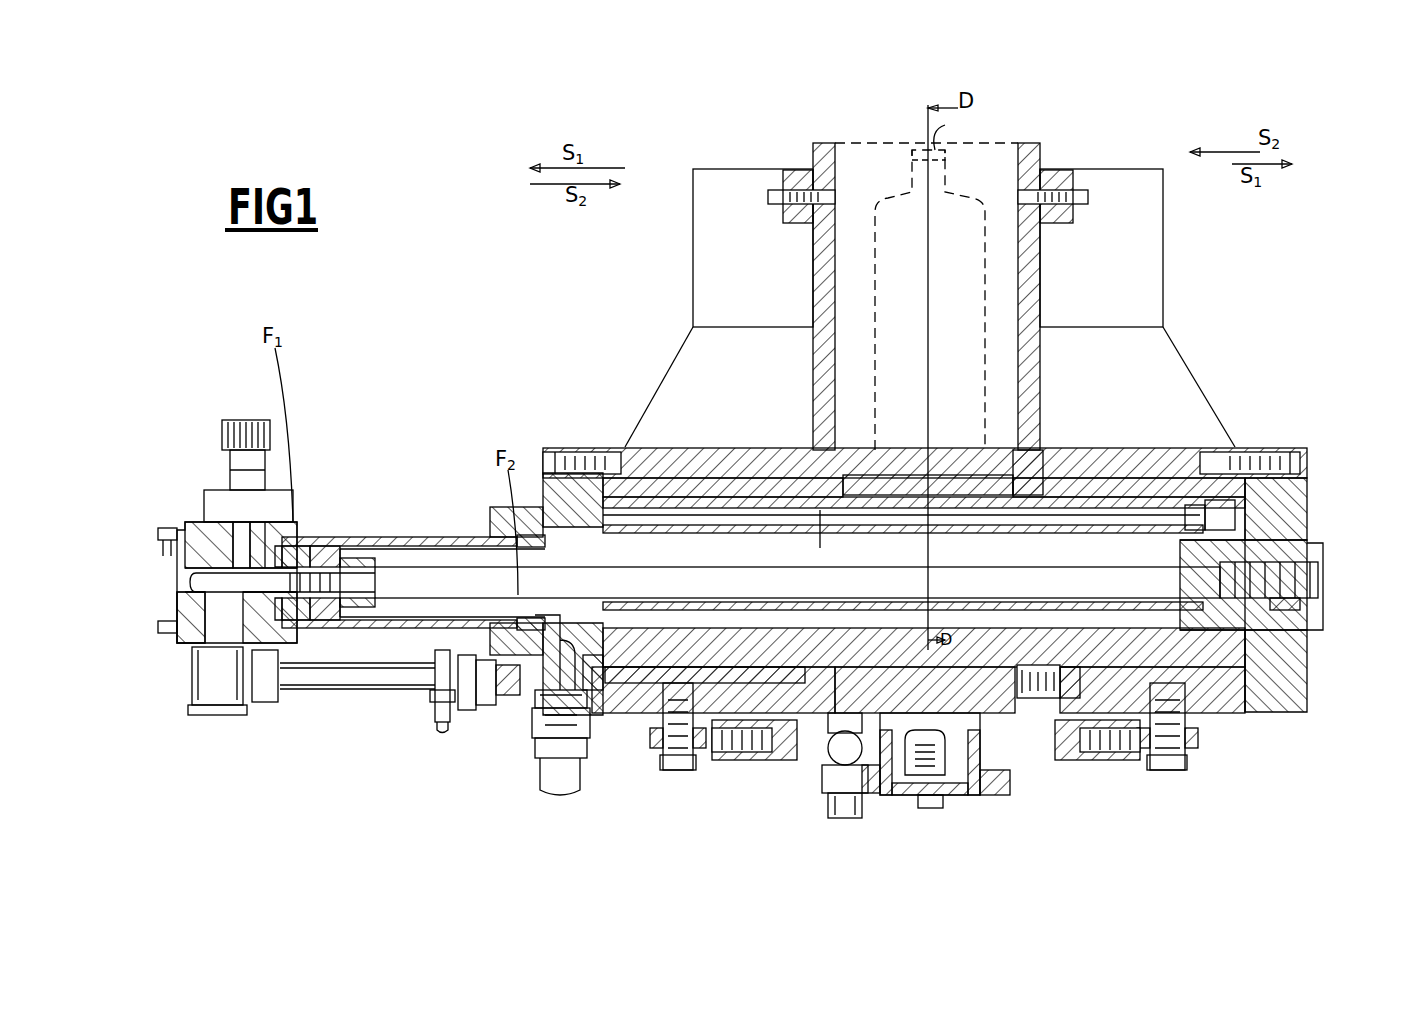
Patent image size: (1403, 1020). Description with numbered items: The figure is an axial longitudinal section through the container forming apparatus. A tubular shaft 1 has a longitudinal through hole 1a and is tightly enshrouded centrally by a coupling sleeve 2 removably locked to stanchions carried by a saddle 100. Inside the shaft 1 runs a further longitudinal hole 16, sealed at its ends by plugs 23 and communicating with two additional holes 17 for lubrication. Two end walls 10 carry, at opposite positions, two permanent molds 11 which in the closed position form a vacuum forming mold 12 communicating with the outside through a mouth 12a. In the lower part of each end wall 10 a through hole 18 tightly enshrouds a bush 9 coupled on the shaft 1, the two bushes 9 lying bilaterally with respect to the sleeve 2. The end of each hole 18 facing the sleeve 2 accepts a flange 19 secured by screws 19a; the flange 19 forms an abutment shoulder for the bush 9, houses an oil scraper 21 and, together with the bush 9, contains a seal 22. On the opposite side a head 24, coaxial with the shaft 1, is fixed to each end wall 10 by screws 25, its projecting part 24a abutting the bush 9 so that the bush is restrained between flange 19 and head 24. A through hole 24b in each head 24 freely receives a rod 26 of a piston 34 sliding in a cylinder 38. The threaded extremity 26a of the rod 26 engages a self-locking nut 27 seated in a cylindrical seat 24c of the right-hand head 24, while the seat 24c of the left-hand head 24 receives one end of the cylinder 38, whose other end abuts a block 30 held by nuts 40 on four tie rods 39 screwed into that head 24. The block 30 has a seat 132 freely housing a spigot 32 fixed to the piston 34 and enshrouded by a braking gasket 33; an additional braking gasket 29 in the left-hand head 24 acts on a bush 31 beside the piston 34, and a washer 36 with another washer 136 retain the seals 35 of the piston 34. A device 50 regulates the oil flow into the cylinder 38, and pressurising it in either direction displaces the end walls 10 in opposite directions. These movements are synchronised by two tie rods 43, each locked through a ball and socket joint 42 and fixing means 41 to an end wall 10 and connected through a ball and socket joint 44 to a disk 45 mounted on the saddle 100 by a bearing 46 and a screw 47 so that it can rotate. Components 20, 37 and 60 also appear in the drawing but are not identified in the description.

The tubular shaft 1 is at (735, 502).
The longitudinal through hole 1a is at (946, 559).
The sleeve 2 is at (955, 485).
The bush 9 is at (705, 465).
The end wall 10 is at (760, 266).
The permanent mold 11 is at (870, 184).
The vacuum forming mold 12 is at (922, 392).
The mouth 12a is at (961, 131).
The hole 16 is at (833, 536).
The additional holes 17 is at (640, 505).
The through hole 18 is at (1260, 712).
The flange 19 is at (1000, 662).
The screws 19a is at (1035, 470).
The lower plate 20 is at (1048, 700).
The oil scraper 21 is at (1027, 665).
The seal 22 is at (1068, 665).
The plugs 23 is at (1238, 512).
The head 24 is at (495, 510).
The projecting part 24a is at (1240, 450).
The through hole 24b is at (1262, 650).
The cylindrical seat 24c is at (1300, 553).
The screws 25 is at (555, 450).
The rod 26 is at (808, 590).
The extremity of the rod 26a is at (1290, 580).
The self-locking nut 27 is at (1290, 612).
The braking gasket 29 is at (520, 695).
The block 30 is at (238, 655).
The bush 31 is at (355, 558).
The spigot 32 is at (205, 643).
The braking gasket 33 is at (241, 522).
The piston 34 is at (300, 546).
The seals 35 is at (325, 546).
The washer 36 is at (325, 610).
The fitting 37 is at (480, 705).
The cylinder 38 is at (405, 537).
The tie rods 39 is at (450, 540).
The nuts 40 is at (177, 530).
The fixing means 41 is at (678, 770).
The ball and socket joint 42 is at (645, 742).
The tie rods 43 is at (745, 768).
The ball and socket joint 44 is at (820, 752).
The disk 45 is at (872, 795).
The bearing 46 is at (980, 790).
The screw 47 is at (938, 810).
The device for regulating the flow of oil 50 is at (246, 418).
The tube 60 is at (370, 700).
The saddle 100 is at (990, 712).
The seat 132 is at (168, 634).
The washer 136 is at (270, 643).